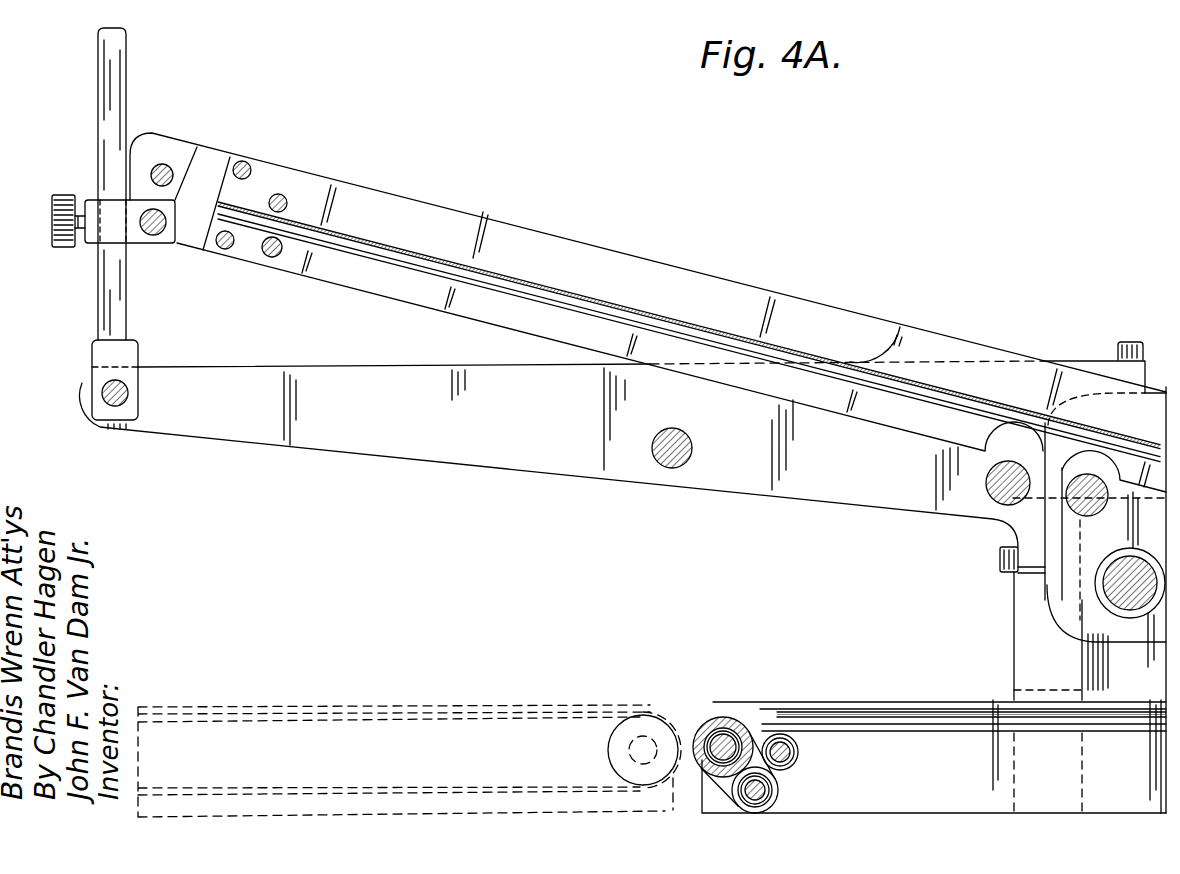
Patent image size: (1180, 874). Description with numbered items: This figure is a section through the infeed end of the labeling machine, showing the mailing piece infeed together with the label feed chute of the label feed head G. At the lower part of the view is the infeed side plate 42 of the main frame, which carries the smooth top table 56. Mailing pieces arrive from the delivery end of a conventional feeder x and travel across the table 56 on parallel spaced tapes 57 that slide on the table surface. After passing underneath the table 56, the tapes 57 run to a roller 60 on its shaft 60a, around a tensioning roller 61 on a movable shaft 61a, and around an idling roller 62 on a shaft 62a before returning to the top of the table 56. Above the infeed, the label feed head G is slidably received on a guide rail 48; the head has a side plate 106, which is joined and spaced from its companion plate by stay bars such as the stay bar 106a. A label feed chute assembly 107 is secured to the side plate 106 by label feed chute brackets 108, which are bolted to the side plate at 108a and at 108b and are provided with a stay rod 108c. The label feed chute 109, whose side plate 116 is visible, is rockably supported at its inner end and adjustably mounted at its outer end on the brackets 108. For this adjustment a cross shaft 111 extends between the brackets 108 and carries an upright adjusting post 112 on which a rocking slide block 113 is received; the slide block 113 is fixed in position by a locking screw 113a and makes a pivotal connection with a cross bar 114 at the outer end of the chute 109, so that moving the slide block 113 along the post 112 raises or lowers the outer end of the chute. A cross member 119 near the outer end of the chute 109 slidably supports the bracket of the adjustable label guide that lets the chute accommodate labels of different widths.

The upright adjusting post 112 is at (107, 78).
The cross shaft 111 is at (109, 392).
The rocking slide block 113 is at (97, 238).
The locking screw 113a is at (61, 196).
The cross bar 114 is at (153, 236).
The cross member 119 is at (168, 167).
The label feed chute assembly 107 is at (730, 268).
The side plate 116 is at (500, 235).
The label feed chute 109 is at (880, 343).
The label feed chute brackets 108 is at (834, 476).
The label feed head G is at (1081, 354).
The bolt 108b is at (1146, 328).
The stay rod 108c is at (665, 462).
The bolt 108a is at (992, 497).
The stay bar 106a is at (1077, 500).
The side plate 106 is at (1063, 600).
The guide rail 48 is at (1118, 563).
The mailing piece feeder x is at (502, 697).
The idling roller 62 is at (713, 718).
The shaft 62a is at (738, 734).
The roller 60 is at (797, 760).
The shaft 60a is at (791, 748).
The tensioning roller 61 is at (762, 798).
The movable shaft 61a is at (779, 803).
The infeed side plate 42 is at (960, 700).
The table 56 is at (889, 701).
The tapes 57 is at (965, 732).